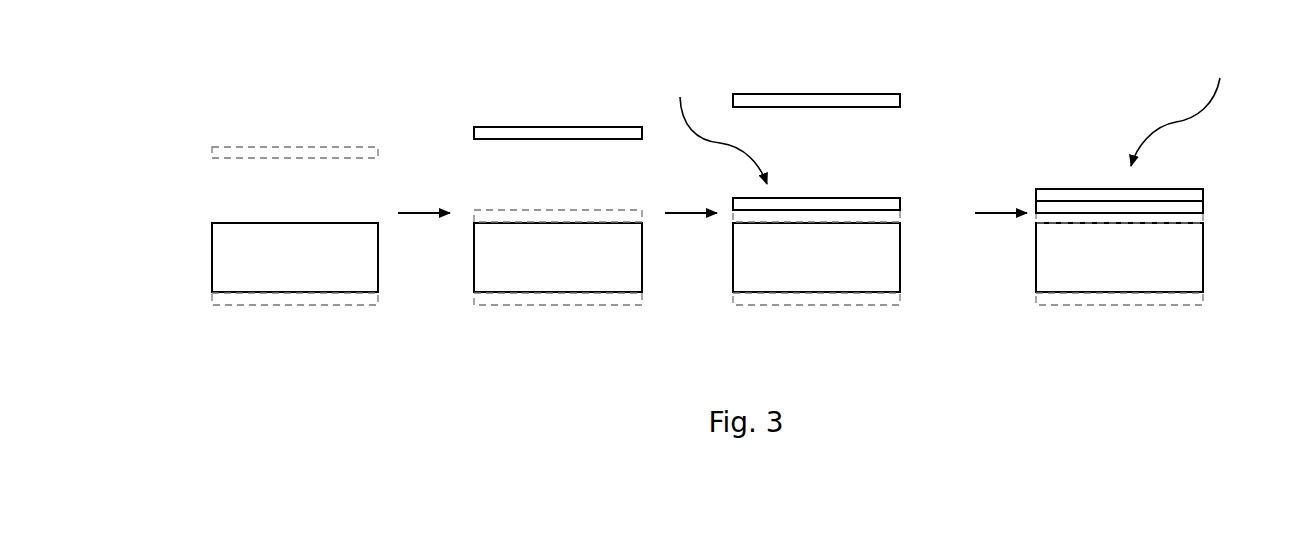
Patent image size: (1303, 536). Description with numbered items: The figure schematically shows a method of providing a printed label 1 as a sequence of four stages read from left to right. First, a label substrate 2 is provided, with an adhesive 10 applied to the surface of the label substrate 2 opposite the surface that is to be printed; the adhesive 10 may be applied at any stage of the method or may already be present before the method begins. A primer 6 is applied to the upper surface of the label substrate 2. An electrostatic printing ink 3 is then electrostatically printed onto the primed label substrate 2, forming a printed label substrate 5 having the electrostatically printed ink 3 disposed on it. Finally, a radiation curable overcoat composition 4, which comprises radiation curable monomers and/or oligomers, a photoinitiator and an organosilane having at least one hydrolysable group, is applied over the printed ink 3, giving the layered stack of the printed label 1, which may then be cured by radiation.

The printed label 1 is at (1190, 108).
The label substrate 2 is at (707, 257).
The electrostatic printing ink 3 is at (485, 127).
The radiation curable overcoat composition 4 is at (900, 99).
The printed label substrate 5 is at (720, 127).
The primer 6 is at (260, 147).
The adhesive 10 is at (378, 297).